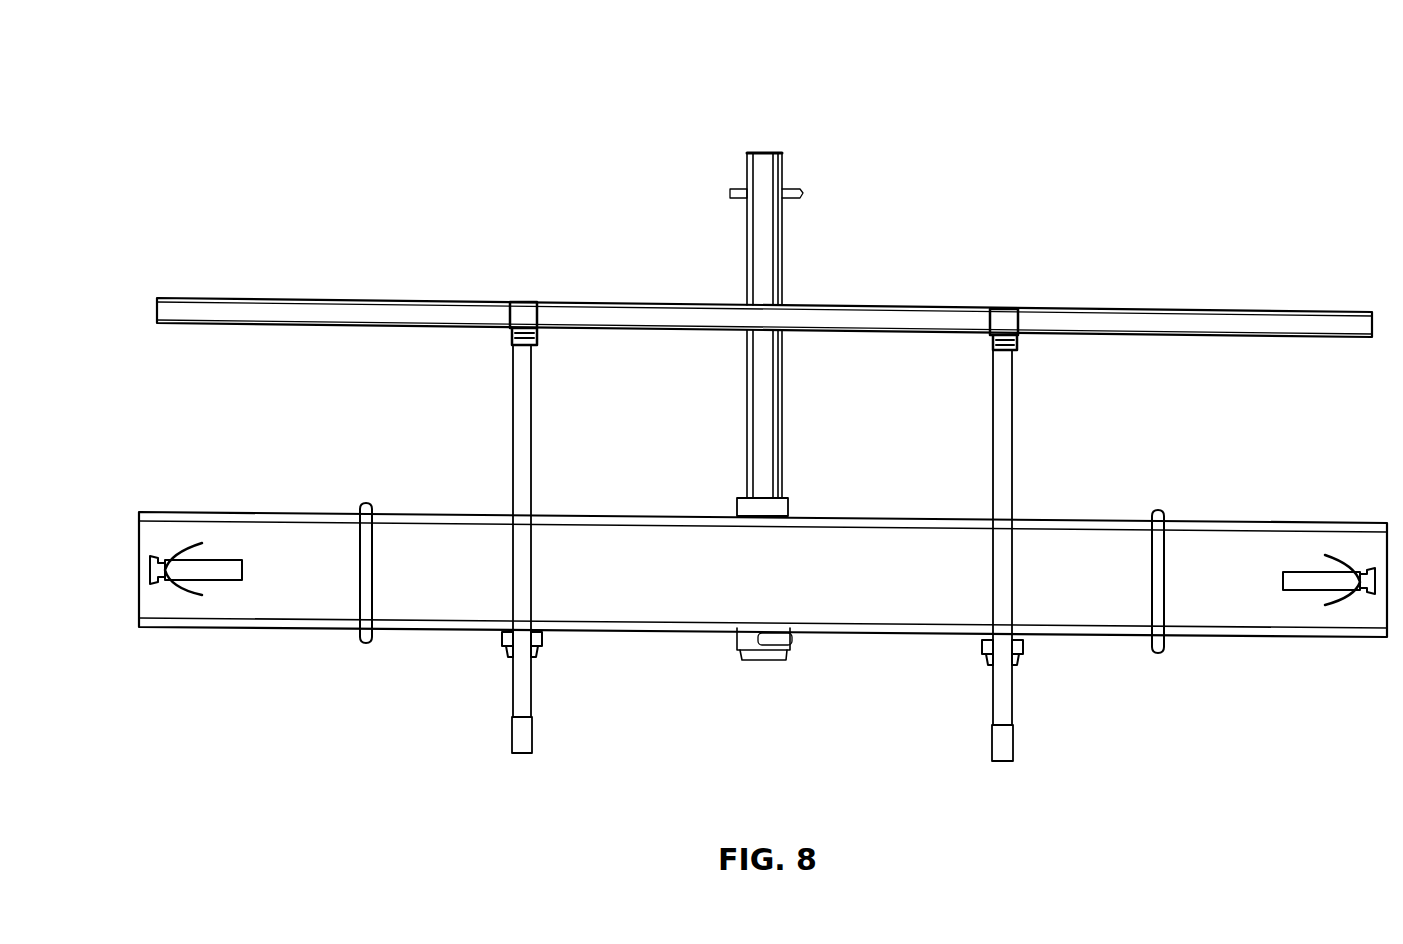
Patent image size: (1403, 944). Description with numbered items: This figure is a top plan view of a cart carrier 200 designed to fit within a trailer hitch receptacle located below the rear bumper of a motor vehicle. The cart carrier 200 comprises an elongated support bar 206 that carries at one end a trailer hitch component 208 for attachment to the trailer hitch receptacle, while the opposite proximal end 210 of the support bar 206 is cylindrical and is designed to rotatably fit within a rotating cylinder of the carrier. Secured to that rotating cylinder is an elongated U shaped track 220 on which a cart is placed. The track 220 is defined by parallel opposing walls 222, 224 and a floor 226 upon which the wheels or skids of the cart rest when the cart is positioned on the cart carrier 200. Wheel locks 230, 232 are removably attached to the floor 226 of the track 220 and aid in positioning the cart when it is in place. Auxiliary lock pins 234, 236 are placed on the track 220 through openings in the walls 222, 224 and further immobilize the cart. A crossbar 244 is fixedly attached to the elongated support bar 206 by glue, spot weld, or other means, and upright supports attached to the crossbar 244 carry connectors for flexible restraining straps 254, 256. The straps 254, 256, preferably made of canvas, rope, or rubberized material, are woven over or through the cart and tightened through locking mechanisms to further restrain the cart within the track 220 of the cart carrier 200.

The cart carrier 200 is at (497, 203).
The elongated support bar 206 is at (745, 388).
The trailer hitch component 208 is at (742, 158).
The proximal end 210 is at (745, 661).
The elongated U shaped track 220 is at (1105, 628).
The wall 222 is at (290, 626).
The wall 224 is at (283, 508).
The floor 226 is at (421, 579).
The wheel lock 230 is at (215, 577).
The wheel lock 232 is at (1308, 587).
The auxiliary lock pin 234 is at (365, 503).
The auxiliary lock pin 236 is at (1157, 512).
The crossbar 244 is at (300, 304).
The flexible restraining strap 254 is at (520, 410).
The flexible restraining strap 256 is at (995, 410).